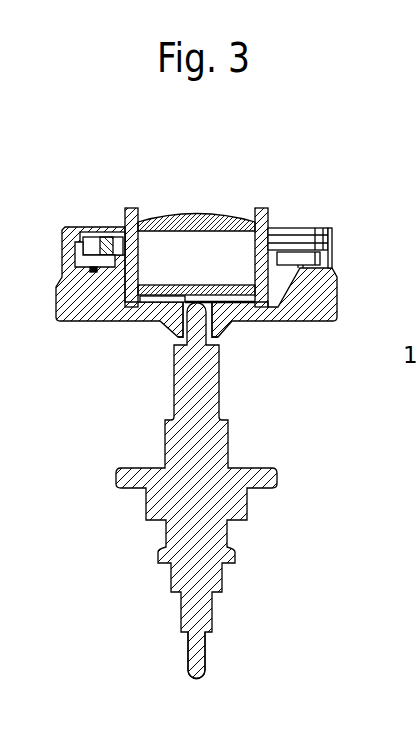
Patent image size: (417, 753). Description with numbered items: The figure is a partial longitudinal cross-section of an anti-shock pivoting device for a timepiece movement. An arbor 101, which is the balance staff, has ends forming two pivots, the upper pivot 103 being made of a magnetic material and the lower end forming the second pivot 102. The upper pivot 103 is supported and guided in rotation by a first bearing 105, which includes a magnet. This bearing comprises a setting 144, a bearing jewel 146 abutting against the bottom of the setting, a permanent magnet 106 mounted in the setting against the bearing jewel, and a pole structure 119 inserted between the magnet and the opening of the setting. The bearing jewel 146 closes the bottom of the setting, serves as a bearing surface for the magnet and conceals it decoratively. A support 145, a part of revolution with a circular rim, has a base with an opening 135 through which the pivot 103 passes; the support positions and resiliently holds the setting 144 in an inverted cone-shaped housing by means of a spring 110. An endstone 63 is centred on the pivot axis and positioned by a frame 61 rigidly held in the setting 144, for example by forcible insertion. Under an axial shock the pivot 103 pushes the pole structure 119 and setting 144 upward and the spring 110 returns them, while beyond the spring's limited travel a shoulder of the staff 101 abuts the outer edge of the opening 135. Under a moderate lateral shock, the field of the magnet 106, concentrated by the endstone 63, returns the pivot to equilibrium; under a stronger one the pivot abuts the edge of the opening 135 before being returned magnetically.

The support 145 is at (70, 307).
The spring 110 is at (120, 242).
The setting 144 is at (96, 272).
The bearing jewel 146 is at (227, 221).
The permanent magnet 106 is at (213, 273).
The pole structure 119 is at (160, 284).
The frame 61 is at (231, 300).
The endstone 63 is at (185, 297).
The first bearing 105 is at (342, 232).
The opening 135 is at (209, 337).
The pivot 103 is at (189, 337).
The arbor 101 is at (230, 448).
The pivot 102 is at (206, 651).